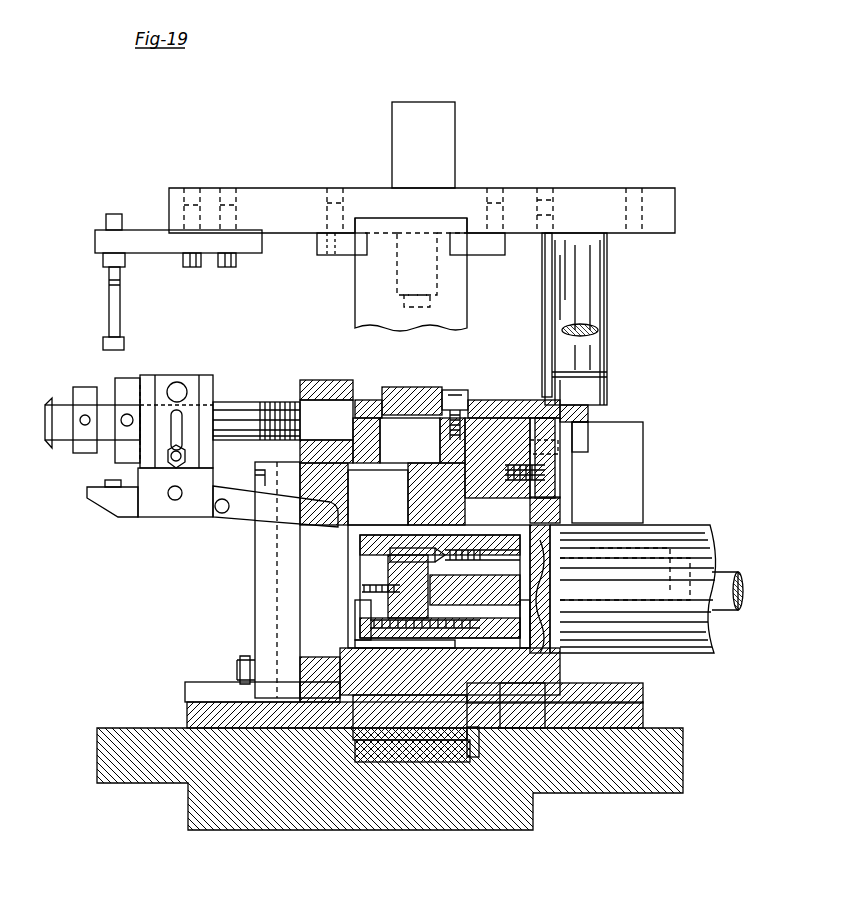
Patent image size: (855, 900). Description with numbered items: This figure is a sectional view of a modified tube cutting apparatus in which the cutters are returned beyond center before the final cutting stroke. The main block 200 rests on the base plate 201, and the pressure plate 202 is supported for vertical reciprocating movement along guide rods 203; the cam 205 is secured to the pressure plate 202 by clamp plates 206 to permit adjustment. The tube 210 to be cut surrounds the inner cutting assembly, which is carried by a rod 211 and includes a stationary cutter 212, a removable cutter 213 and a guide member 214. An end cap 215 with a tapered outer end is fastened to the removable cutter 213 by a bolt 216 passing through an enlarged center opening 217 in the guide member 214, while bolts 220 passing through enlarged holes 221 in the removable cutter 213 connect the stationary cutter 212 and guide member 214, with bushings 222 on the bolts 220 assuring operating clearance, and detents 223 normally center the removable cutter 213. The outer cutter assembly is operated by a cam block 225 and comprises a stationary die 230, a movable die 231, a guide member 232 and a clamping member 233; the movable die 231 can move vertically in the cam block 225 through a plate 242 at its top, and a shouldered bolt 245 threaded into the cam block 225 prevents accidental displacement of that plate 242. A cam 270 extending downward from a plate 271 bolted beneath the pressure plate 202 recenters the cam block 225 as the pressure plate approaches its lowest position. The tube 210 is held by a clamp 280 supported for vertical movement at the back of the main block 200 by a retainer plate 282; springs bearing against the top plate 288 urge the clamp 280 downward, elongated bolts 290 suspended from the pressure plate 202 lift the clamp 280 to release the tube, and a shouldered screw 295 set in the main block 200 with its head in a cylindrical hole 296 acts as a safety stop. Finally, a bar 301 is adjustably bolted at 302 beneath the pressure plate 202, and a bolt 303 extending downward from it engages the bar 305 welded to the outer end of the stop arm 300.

The main block 200 is at (650, 702).
The base plate 201 is at (205, 822).
The pressure plate 202 is at (250, 196).
The guide rods 203 is at (600, 345).
The cam 205 is at (362, 302).
The clamp plates 206 is at (317, 246).
The tube 210 is at (713, 552).
The rod 211 is at (722, 606).
The stationary cutter or punch 212 is at (545, 620).
The removable cutter or punch 213 is at (372, 578).
The guide member 214 is at (368, 622).
The end cap 215 is at (350, 525).
The bolt 216 is at (335, 590).
The enlarged center opening 217 is at (360, 588).
The bolts 220 is at (345, 622).
The enlarged holes 221 is at (355, 642).
The bushings 222 is at (527, 640).
The detents 223 is at (560, 508).
The cam block 225 is at (425, 740).
The stationary cutter or die 230 is at (518, 683).
The movable cutter or die 231 is at (478, 728).
The guide member 232 is at (392, 460).
The clamping member 233 is at (312, 697).
The plate 242 is at (408, 393).
The shouldered bolt 245 is at (455, 398).
The cam 270 is at (425, 287).
The plate 271 is at (388, 225).
The clamp 280 is at (643, 500).
The retainer plate 282 is at (591, 428).
The top plate 288 is at (522, 407).
The elongated bolts 290 is at (545, 340).
The shouldered screw 295 is at (558, 458).
The cylindrical hole 296 is at (550, 475).
The stop arm 300 is at (225, 512).
The bar 301 is at (95, 242).
The bolts 302 is at (227, 268).
The bolt 303 is at (110, 318).
The bar 305 is at (110, 483).